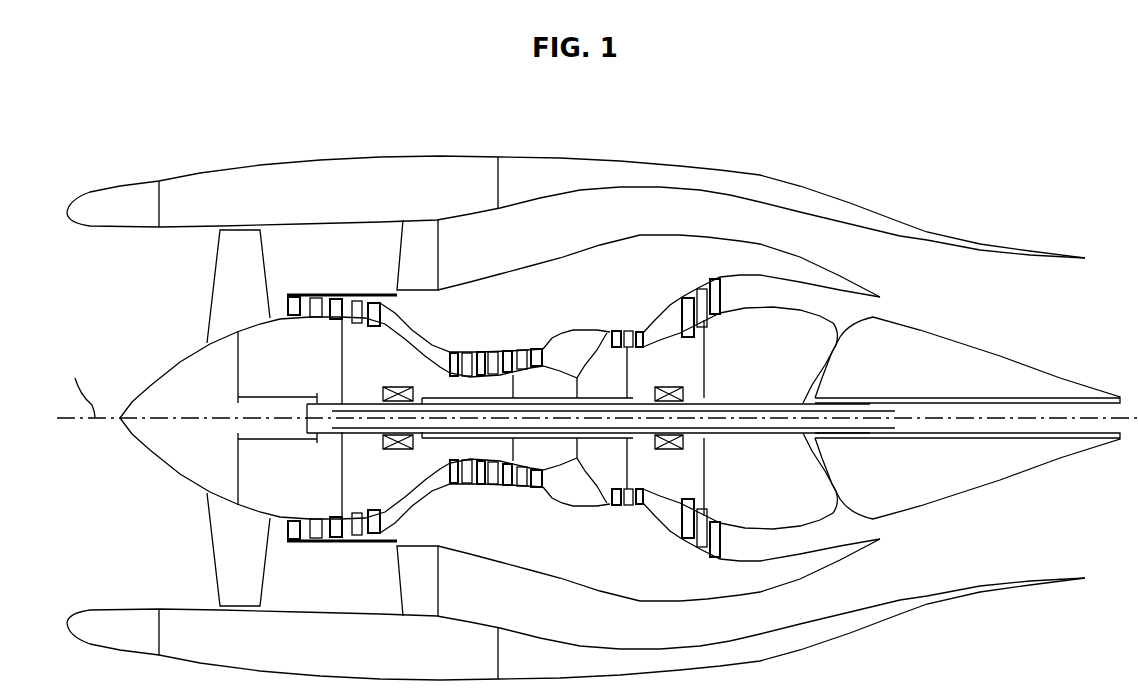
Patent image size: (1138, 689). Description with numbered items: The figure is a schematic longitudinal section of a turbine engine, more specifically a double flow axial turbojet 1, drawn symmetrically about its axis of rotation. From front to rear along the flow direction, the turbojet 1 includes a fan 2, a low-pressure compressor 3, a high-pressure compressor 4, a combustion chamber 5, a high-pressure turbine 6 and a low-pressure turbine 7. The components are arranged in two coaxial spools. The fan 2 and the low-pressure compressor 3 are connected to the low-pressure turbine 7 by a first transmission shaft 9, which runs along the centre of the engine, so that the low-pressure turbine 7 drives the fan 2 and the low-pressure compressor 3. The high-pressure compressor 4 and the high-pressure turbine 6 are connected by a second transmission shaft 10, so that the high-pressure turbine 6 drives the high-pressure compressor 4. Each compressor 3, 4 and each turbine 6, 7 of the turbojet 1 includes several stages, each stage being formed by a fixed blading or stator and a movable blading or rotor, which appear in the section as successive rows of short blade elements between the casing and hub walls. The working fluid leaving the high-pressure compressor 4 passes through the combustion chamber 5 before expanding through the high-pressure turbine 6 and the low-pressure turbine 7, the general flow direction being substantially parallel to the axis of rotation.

The double flow axial turbojet 1 is at (877, 90).
The fan 2 is at (200, 283).
The low-pressure compressor 3 is at (350, 292).
The high-pressure compressor 4 is at (497, 335).
The combustion chamber 5 is at (573, 318).
The high-pressure turbine 6 is at (622, 317).
The low-pressure turbine 7 is at (699, 270).
The first transmission shaft 9 is at (753, 422).
The second transmission shaft 10 is at (605, 330).